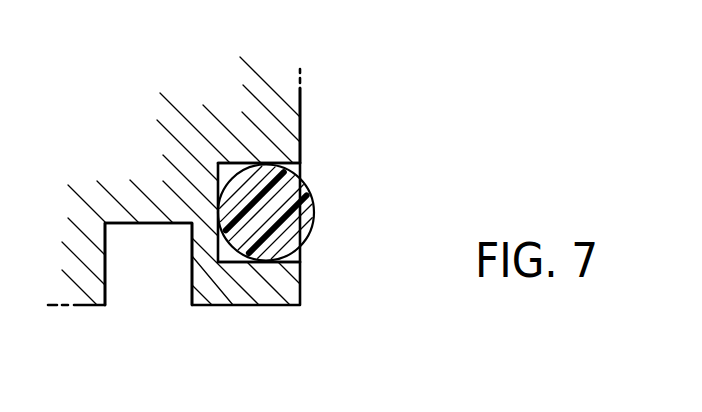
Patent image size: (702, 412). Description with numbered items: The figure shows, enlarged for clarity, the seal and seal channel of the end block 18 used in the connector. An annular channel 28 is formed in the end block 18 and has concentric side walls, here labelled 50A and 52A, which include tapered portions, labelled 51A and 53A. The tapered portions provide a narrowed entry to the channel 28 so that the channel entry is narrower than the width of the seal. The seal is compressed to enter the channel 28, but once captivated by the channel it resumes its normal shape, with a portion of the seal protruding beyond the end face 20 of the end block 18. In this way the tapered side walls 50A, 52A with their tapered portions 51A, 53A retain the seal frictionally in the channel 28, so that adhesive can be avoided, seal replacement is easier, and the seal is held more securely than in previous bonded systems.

The end block 18 is at (197, 133).
The end face 20 is at (302, 112).
The annular channel 28 is at (218, 243).
The seal groove 50A is at (237, 262).
The groove lower side wall 51A is at (303, 262).
The groove upper side wall 52A is at (258, 160).
The O-ring seal 53A is at (298, 165).